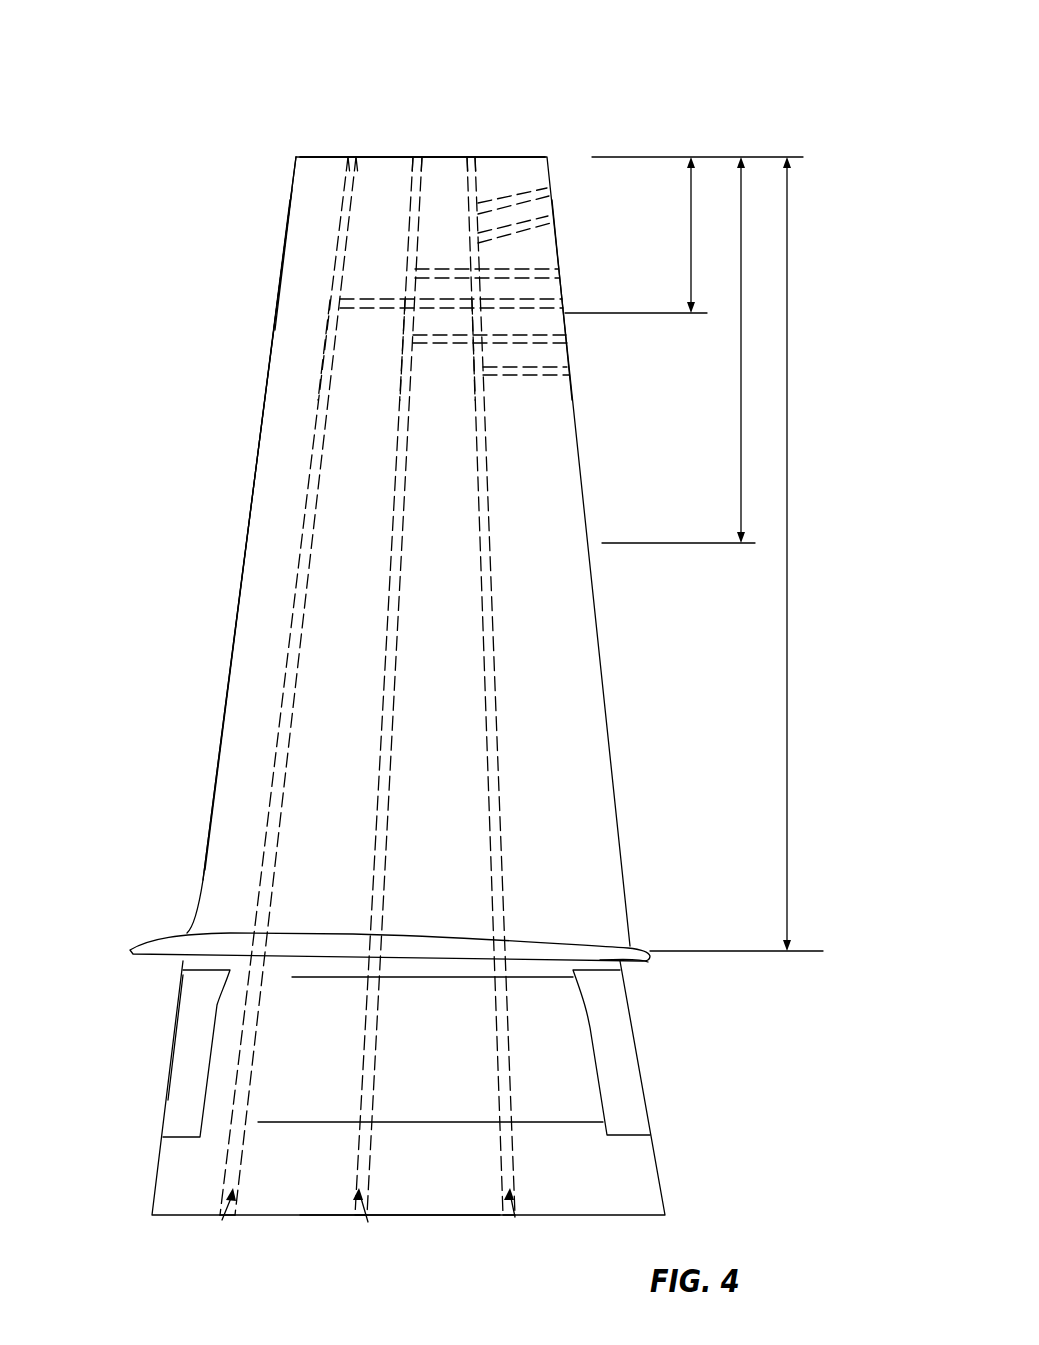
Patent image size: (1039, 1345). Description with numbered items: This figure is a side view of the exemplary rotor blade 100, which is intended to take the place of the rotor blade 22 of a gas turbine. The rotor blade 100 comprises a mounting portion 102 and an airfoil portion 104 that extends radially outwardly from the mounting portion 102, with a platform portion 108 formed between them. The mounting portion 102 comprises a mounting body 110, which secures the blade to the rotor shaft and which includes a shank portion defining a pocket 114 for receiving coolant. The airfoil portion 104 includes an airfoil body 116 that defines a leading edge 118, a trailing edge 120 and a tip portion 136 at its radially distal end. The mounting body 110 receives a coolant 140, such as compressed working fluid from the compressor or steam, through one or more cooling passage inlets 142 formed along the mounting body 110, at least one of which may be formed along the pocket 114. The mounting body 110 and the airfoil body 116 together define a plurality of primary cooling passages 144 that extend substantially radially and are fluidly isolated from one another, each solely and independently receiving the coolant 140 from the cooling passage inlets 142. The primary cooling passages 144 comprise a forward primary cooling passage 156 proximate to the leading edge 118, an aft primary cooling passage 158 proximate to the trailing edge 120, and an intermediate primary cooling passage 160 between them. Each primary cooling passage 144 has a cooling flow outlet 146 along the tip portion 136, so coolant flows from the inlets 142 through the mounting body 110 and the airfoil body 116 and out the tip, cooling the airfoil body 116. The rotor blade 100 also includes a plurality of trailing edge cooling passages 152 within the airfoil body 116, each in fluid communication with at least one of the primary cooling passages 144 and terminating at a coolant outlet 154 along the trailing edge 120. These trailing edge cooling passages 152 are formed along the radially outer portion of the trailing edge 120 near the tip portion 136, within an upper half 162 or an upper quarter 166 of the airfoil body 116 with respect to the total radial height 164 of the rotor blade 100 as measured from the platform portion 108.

The rotor blade 100 is at (552, 66).
The rotor blade 22 is at (568, 33).
The mounting portion 102 is at (157, 1094).
The airfoil portion 104 is at (170, 490).
The platform portion 108 is at (560, 950).
The mounting body 110 is at (232, 1005).
The pocket 114 is at (461, 1062).
The airfoil body 116 is at (262, 618).
The leading edge 118 is at (268, 345).
The trailing edge 120 is at (575, 432).
The tip portion 136 is at (317, 145).
The coolant 140 is at (228, 1216).
The cooling passage inlets 142 is at (222, 1220).
The primary cooling passages 144 is at (305, 512).
The cooling flow outlet 146 is at (350, 158).
The trailing edge cooling passages 152 is at (530, 190).
The coolant outlet 154 is at (555, 184).
The forward primary cooling passage 156 is at (318, 400).
The aft primary cooling passage 158 is at (473, 402).
The intermediate primary cooling passage 160 is at (398, 395).
The upper half 162 is at (741, 300).
The total radial height 164 is at (787, 530).
The upper quarter 166 is at (691, 217).